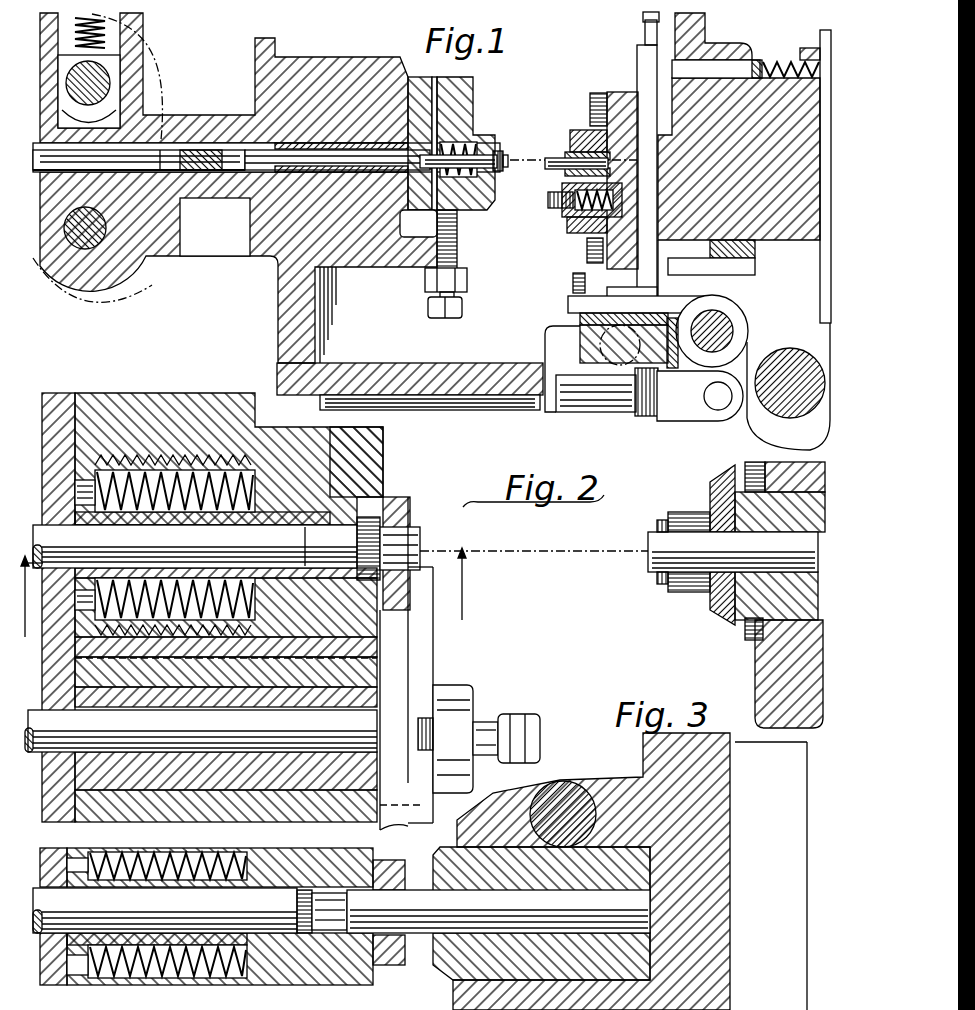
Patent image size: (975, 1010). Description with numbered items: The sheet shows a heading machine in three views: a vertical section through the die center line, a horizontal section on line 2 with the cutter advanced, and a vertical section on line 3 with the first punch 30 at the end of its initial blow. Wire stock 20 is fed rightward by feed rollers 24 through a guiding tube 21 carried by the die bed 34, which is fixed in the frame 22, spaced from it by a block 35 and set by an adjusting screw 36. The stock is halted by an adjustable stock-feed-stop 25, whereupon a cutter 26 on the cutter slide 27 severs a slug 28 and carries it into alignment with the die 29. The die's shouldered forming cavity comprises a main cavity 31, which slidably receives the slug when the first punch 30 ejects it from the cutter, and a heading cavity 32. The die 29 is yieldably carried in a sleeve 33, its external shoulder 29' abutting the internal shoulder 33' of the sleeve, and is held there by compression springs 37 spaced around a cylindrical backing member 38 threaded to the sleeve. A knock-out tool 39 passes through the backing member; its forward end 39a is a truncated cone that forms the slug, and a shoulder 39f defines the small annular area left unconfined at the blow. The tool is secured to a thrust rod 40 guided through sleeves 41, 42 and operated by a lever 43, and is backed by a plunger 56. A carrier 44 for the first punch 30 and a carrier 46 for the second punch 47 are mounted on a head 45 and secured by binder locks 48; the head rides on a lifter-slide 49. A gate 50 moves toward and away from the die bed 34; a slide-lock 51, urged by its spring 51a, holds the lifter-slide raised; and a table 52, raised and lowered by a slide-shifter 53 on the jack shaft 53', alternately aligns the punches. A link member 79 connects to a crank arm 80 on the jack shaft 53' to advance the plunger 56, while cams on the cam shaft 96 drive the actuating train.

In FIG. 1, the section line 2— 2 is at (434, 78).
In FIG. 2, the section line 3— 3 is at (243, 602).
In FIG. 2, the metal rod or wire stock 20 is at (201, 731).
In FIG. 2, the guiding tube 21 is at (157, 770).
In FIG. 1, the frame 22 is at (342, 60).
In FIG. 1, the feed rollers 24 is at (155, 47).
In FIG. 2, the adjustable stock-feed-stop 25 is at (427, 730).
In FIG. 2, the cutter 26 is at (400, 660).
In FIG. 3, the cutter 26 is at (398, 965).
In FIG. 2, the cutter slide 27 is at (420, 683).
In FIG. 2, the slug 28 is at (410, 545).
In FIG. 3, the slug 28 is at (305, 935).
In FIG. 1, the die 29 is at (566, 174).
In FIG. 2, the die 29 is at (376, 495).
In FIG. 3, the die 29 is at (345, 951).
In FIG. 2, the external shoulder of the die 29' is at (411, 455).
In FIG. 1, the first punch 30 is at (551, 157).
In FIG. 2, the first punch 30 is at (648, 562).
In FIG. 3, the first punch 30 is at (498, 911).
In FIG. 2, the main cavity 31 is at (413, 500).
In FIG. 2, the heading cavity 32 is at (400, 527).
In FIG. 2, the sleeve 33 is at (372, 462).
In FIG. 1, the internal shoulder of the sleeve 33' is at (410, 396).
In FIG. 1, the die bed 34 is at (462, 80).
In FIG. 2, the die bed 34 is at (210, 407).
In FIG. 1, the block 35 is at (418, 75).
In FIG. 2, the block 35 is at (62, 403).
In FIG. 1, the adjusting screw 36 is at (462, 301).
In FIG. 2, the compression springs 37 is at (128, 463).
In FIG. 2, the cylindrical backing member 38 is at (163, 465).
In FIG. 1, the knock-out tool 39 is at (473, 148).
In FIG. 2, the knock-out tool 39 is at (195, 546).
In FIG. 3, the knock-out tool 39 is at (203, 916).
In FIG. 2, the forward end of the knock-out tool 39a is at (281, 546).
In FIG. 3, the forward end of the knock-out tool 39a is at (293, 899).
In FIG. 2, the shoulder on the knock-out tool 39f is at (413, 586).
In FIG. 1, the thrust rod 40 is at (285, 158).
In FIG. 1, the sleeve 41 is at (215, 227).
In FIG. 1, the sleeve 42 is at (418, 223).
In FIG. 1, the lever 43 is at (199, 150).
In FIG. 1, the carrier for the first punch 44 is at (565, 172).
In FIG. 2, the carrier for the first punch 44 is at (713, 491).
In FIG. 3, the carrier for the first punch 44 is at (440, 858).
In FIG. 1, the head 45 is at (612, 91).
In FIG. 2, the head 45 is at (768, 463).
In FIG. 3, the head 45 is at (643, 748).
In FIG. 2, the carrier for the second punch 46 is at (740, 628).
In FIG. 1, the second punch 47 is at (551, 208).
In FIG. 2, the second punch 47 is at (660, 588).
In FIG. 1, the binder locks 48 is at (585, 133).
In FIG. 3, the binder locks 48 is at (563, 803).
In FIG. 1, the lifter-slide 49 is at (642, 62).
In FIG. 1, the gate 50 is at (720, 85).
In FIG. 1, the slide-lock 51 is at (755, 62).
In FIG. 1, the spring of the slide-lock 51a is at (776, 60).
In FIG. 1, the table 52 is at (580, 319).
In FIG. 1, the slide-shifter 53 is at (689, 416).
In FIG. 1, the jack shaft 53' is at (726, 331).
In FIG. 1, the plunger 56 is at (143, 150).
In FIG. 1, the link member 79 is at (572, 393).
In FIG. 1, the crank arm 80 is at (730, 362).
In FIG. 1, the cam shaft 96 is at (773, 400).